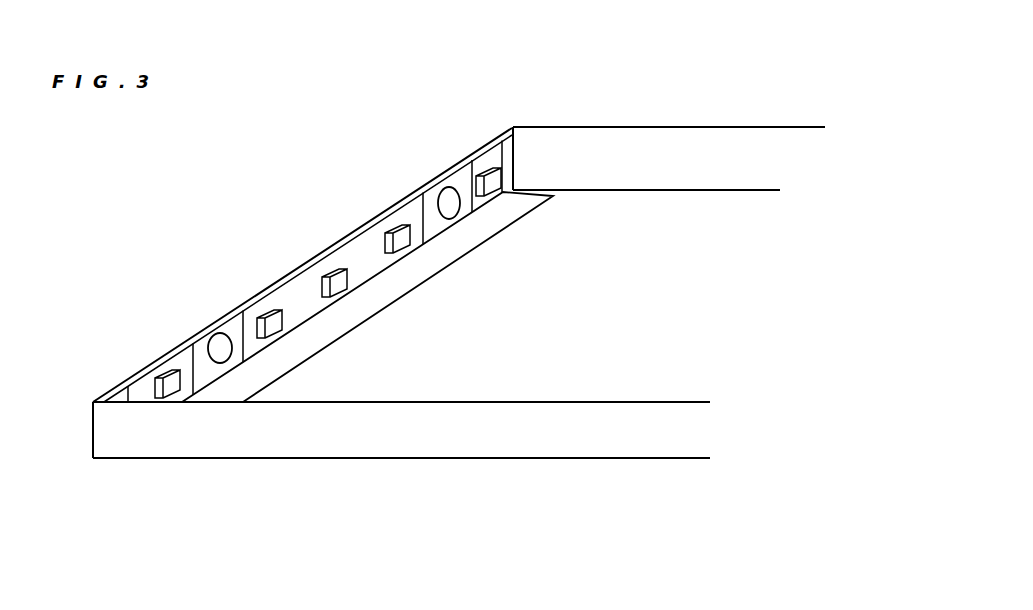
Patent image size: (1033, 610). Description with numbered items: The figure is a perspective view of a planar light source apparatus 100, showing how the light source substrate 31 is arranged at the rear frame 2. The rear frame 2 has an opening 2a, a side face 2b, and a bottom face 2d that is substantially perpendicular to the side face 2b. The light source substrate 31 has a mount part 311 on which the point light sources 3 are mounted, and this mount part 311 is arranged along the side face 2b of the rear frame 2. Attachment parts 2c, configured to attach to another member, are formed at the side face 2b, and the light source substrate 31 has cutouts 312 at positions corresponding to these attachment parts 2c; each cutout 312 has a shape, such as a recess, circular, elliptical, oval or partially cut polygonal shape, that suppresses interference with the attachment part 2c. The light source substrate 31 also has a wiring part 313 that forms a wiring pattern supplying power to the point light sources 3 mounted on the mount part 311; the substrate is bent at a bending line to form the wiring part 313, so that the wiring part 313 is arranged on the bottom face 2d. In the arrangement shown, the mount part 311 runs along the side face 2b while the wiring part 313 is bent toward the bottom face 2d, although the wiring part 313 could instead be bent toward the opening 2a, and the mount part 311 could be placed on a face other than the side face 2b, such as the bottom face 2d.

The display device 100 is at (430, 304).
The rear frame 2 is at (262, 433).
The opening 2a is at (669, 133).
The side face 2b is at (316, 262).
The attachment part 2c is at (217, 332).
The bottom face 2d is at (690, 220).
The point light source 3 is at (392, 233).
The light source substrate 31 is at (145, 390).
The mount part 311 is at (500, 152).
The cutout 312 is at (177, 280).
The wiring part 313 is at (474, 228).